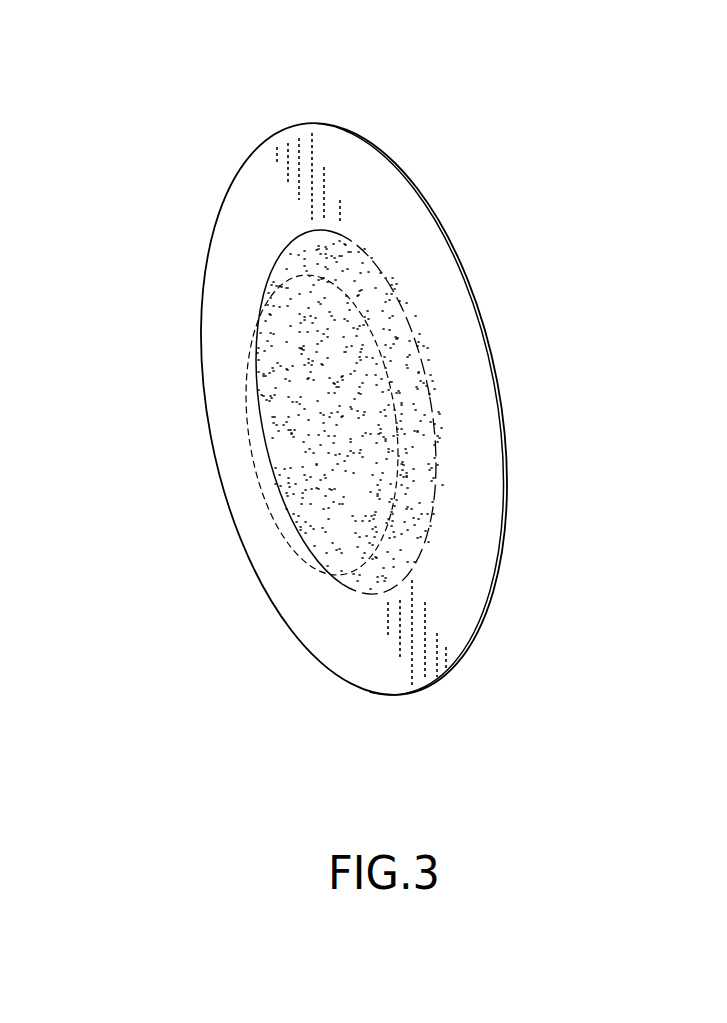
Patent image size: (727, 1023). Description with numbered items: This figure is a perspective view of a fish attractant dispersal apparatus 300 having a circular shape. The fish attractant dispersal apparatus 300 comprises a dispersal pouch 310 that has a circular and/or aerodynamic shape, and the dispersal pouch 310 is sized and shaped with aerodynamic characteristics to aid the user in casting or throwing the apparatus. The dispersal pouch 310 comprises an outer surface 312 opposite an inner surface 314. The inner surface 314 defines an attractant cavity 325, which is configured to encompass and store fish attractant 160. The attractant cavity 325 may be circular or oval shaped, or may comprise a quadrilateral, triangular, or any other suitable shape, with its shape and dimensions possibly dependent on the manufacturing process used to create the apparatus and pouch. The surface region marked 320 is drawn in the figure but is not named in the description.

The fish attractant dispersal apparatus 300 is at (188, 108).
The dispersal pouch 310 is at (172, 344).
The outer surface 312 is at (282, 593).
The inner surface 314 is at (287, 518).
The outer annular surface 320 is at (423, 240).
The attractant cavity 325 is at (272, 425).
The fish attractant 160 is at (422, 424).